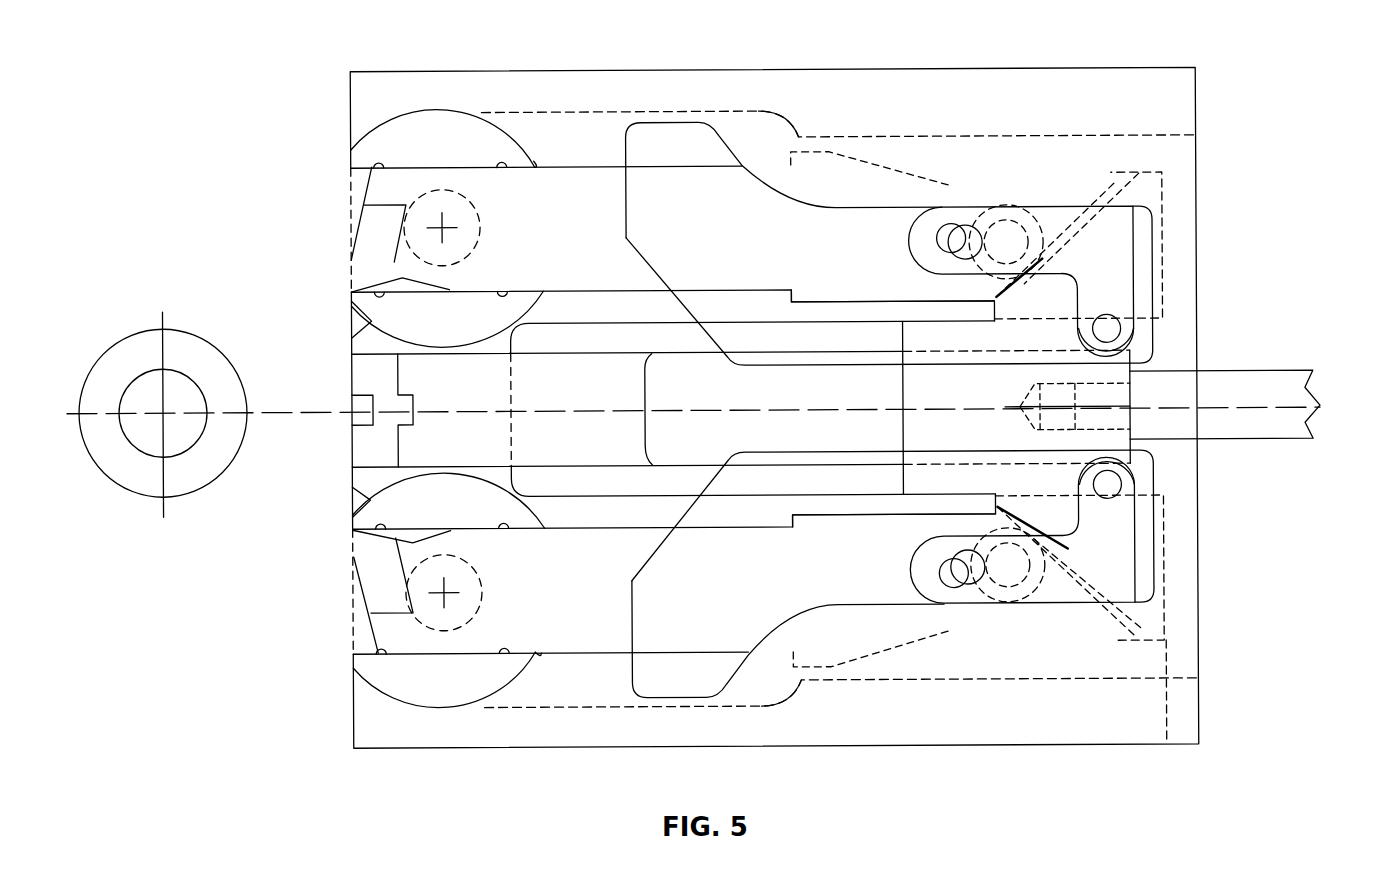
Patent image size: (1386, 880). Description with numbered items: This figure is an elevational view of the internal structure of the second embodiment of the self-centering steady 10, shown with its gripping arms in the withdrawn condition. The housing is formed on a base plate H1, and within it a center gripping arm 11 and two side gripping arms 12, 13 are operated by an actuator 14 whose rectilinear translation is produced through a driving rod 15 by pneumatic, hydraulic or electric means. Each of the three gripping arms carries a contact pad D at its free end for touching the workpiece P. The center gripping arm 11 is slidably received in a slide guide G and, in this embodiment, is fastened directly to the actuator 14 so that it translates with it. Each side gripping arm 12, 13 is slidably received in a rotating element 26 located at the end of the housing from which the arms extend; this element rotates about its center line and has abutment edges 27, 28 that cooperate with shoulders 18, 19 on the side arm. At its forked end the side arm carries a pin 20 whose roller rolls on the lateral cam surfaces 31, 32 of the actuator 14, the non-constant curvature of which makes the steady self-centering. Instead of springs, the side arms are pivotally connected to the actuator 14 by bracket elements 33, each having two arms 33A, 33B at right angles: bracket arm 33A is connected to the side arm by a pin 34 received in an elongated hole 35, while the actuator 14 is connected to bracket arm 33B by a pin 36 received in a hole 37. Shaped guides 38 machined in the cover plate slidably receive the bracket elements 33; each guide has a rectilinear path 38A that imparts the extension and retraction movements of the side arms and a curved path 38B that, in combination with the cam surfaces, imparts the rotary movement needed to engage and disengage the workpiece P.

The self-centering steady 10 is at (300, 172).
The center gripping arm 11 is at (430, 386).
The side gripping arm 12 is at (583, 190).
The side gripping arm 13 is at (580, 593).
The actuator 14 is at (972, 407).
The driving rod 15 is at (1290, 416).
The shoulder 18 is at (793, 163).
The shoulder 19 is at (797, 294).
The pin 20 is at (1005, 245).
The rotating element 26 is at (393, 134).
The abutment edge 27 is at (538, 165).
The abutment edge 28 is at (537, 291).
The lateral cam surface 31 is at (1021, 287).
The lateral cam surface 32 is at (1053, 539).
The bracket element 33 is at (1113, 254).
The bracket arm 33A is at (952, 232).
The bracket arm 33B is at (1125, 301).
The pin 34 is at (962, 228).
The elongated hole 35 is at (1046, 208).
The pin 36 is at (1108, 331).
The hole 37 is at (1103, 306).
The shaped guide 38 is at (790, 565).
The rectilinear path 38A is at (913, 207).
The curved path 38B is at (772, 182).
The contact pad D is at (378, 242).
The slide guide G is at (470, 352).
The workpiece P is at (138, 393).
The base plate H1 is at (857, 69).